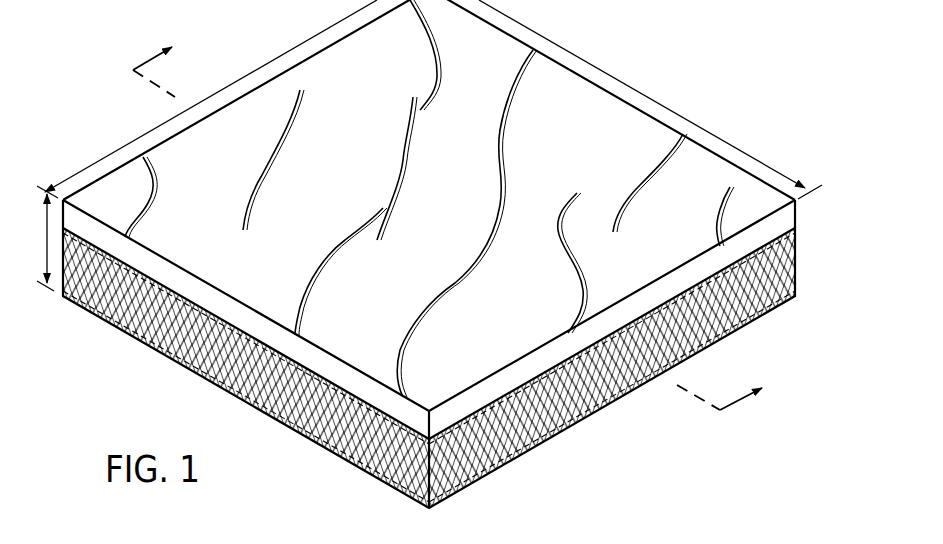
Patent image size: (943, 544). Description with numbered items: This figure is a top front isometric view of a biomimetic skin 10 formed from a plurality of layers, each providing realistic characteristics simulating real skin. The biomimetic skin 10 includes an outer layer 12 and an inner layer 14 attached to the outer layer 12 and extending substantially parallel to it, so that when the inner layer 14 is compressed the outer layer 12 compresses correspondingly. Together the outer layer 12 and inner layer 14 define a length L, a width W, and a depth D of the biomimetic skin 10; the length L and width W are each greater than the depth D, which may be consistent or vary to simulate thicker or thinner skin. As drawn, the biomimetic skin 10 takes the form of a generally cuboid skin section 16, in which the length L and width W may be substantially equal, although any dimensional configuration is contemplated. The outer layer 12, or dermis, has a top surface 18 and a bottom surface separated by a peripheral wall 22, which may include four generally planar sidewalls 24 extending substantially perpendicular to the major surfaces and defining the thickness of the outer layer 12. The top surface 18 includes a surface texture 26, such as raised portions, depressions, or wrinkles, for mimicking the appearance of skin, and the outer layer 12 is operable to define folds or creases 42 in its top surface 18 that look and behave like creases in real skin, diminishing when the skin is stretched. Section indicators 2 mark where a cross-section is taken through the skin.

The biomimetic skin 10 is at (683, 82).
The outer layer 12 is at (673, 210).
The inner layer 14 is at (615, 370).
The skin section 16 is at (112, 92).
The top surface 18 is at (520, 345).
The peripheral wall 22 is at (363, 388).
The sidewalls 24 is at (447, 413).
The surface texture 26 is at (207, 270).
The folds or creases 42 is at (407, 173).
The section line 2- 2 is at (458, 217).
The length L is at (230, 85).
The width W is at (630, 86).
The depth D is at (50, 237).